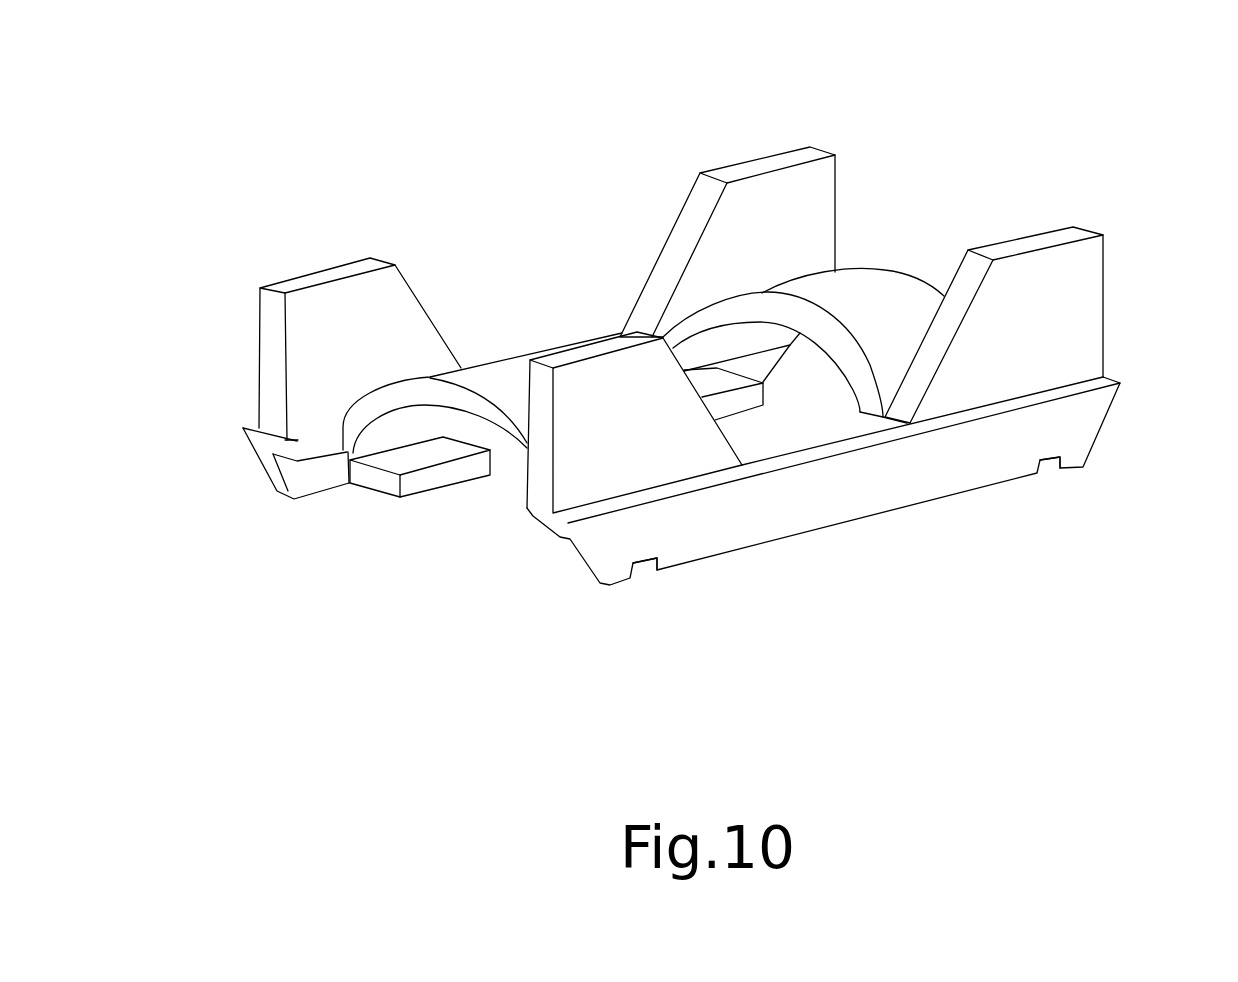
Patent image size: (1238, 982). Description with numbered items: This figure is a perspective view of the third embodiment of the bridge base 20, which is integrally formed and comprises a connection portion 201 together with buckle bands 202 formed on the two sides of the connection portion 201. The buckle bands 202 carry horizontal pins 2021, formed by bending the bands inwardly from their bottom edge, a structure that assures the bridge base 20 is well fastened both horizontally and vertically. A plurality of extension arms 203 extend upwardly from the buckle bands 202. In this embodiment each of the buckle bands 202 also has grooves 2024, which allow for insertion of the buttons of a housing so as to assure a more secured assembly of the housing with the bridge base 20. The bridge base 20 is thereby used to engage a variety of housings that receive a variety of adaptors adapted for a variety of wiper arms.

The bridge base 20 is at (448, 191).
The connection portion 201 is at (923, 280).
The buckle bands 202 is at (300, 440).
The extension arms 203 is at (288, 280).
The horizontal pins 2021 is at (392, 489).
The grooves 2024 is at (638, 570).